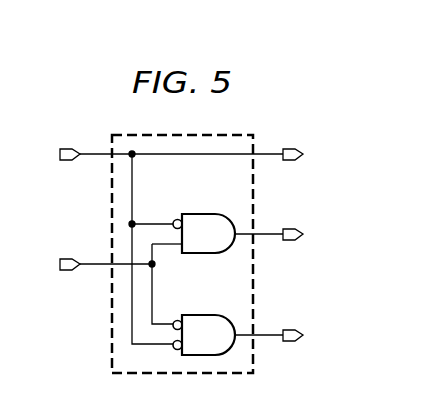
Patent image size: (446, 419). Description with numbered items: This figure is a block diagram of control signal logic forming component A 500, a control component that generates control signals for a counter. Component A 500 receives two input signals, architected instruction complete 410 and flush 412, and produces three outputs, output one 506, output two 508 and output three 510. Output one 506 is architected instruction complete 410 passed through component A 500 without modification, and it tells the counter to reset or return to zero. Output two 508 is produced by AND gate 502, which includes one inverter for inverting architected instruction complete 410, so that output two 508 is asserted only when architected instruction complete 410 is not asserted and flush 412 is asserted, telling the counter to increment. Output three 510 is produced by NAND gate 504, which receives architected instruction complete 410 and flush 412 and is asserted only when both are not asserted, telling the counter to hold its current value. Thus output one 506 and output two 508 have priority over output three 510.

The architected instruction complete 410 is at (63, 146).
The flush 412 is at (67, 271).
The component A 500 is at (319, 69).
The AND gate 502 is at (203, 213).
The NAND gate 504 is at (203, 313).
The output one 506 is at (288, 147).
The output two 508 is at (290, 241).
The output three 510 is at (290, 342).